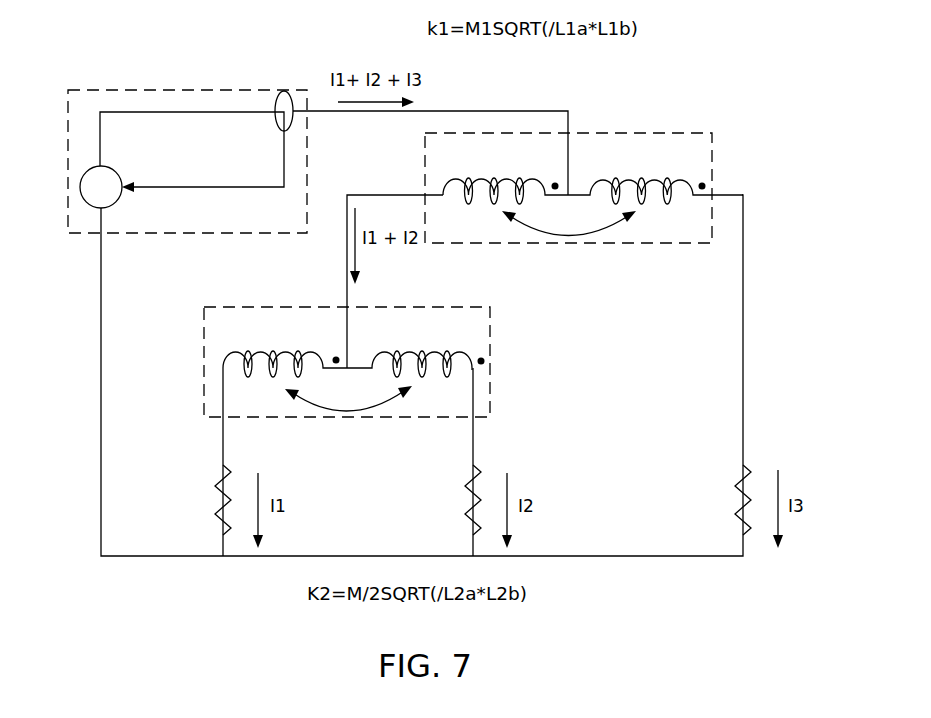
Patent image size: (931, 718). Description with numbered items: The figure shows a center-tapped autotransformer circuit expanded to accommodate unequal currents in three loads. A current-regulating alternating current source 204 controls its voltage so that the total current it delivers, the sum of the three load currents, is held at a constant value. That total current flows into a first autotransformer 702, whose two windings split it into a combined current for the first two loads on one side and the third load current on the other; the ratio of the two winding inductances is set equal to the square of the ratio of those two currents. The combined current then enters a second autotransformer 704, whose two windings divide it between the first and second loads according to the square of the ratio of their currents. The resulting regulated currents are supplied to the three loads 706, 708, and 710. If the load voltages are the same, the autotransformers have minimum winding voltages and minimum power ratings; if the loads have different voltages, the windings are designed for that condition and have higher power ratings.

The alternating current source 204 is at (206, 89).
The autotransformer 702 is at (664, 133).
The autotransformer 704 is at (493, 360).
The load 706 is at (215, 507).
The load 708 is at (465, 507).
The load 710 is at (735, 506).